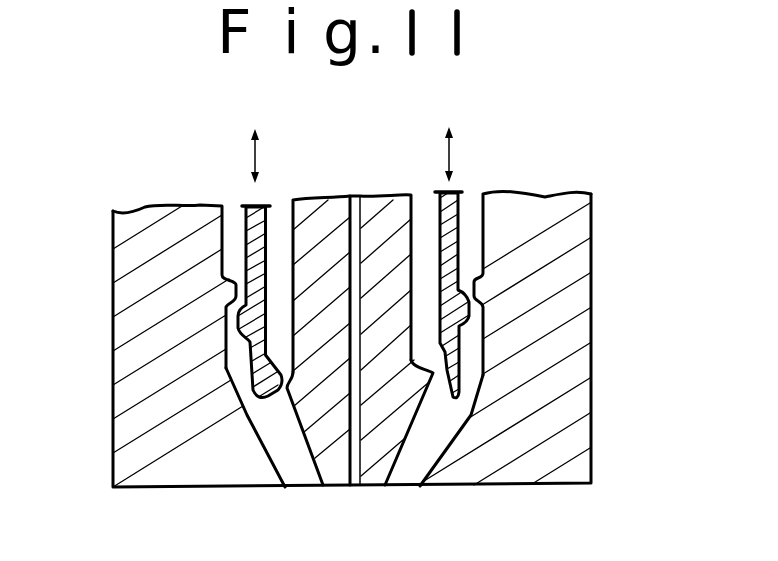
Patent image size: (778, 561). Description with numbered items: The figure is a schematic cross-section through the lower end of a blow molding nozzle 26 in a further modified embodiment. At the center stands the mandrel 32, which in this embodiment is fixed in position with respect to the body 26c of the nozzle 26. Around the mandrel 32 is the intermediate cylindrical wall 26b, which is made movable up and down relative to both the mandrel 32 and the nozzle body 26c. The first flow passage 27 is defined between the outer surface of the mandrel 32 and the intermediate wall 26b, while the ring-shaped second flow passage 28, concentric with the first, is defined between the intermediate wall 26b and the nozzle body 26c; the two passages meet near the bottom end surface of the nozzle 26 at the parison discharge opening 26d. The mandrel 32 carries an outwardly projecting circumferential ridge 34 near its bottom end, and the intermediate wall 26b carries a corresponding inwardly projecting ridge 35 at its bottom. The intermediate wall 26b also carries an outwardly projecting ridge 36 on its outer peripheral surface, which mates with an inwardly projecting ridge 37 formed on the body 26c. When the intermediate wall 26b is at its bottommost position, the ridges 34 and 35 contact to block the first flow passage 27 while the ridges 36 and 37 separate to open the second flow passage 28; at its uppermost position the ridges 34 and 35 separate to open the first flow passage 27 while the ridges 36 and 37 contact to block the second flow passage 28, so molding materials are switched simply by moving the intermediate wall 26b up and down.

The nozzle 26 is at (593, 445).
The intermediate cylindrical wall 26b is at (245, 205).
The nozzle body 26c is at (130, 302).
The parison discharge opening 26d is at (308, 487).
The first flow passage 27 is at (282, 206).
The second flow passage 28 is at (227, 207).
The mandrel 32 is at (383, 205).
The outwardly projecting ridge 34 is at (283, 388).
The inwardly projecting ridge 35 is at (248, 418).
The outwardly projecting ridge 36 is at (237, 320).
The inwardly projecting ridge 37 is at (233, 292).